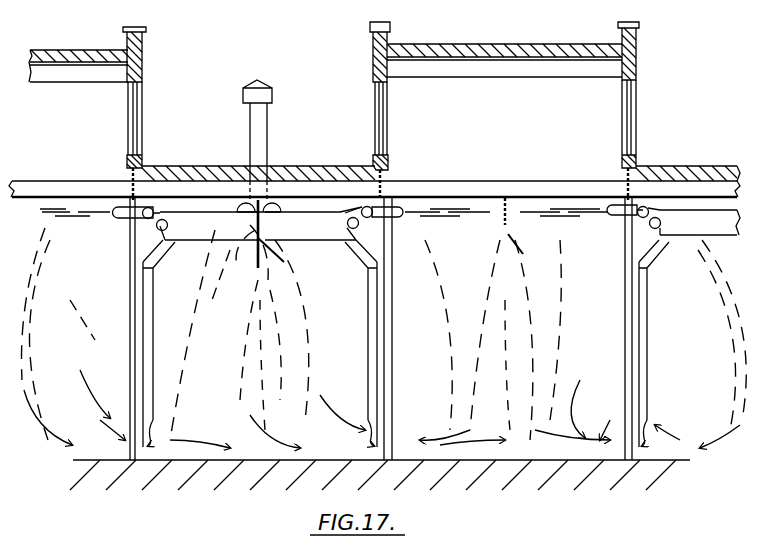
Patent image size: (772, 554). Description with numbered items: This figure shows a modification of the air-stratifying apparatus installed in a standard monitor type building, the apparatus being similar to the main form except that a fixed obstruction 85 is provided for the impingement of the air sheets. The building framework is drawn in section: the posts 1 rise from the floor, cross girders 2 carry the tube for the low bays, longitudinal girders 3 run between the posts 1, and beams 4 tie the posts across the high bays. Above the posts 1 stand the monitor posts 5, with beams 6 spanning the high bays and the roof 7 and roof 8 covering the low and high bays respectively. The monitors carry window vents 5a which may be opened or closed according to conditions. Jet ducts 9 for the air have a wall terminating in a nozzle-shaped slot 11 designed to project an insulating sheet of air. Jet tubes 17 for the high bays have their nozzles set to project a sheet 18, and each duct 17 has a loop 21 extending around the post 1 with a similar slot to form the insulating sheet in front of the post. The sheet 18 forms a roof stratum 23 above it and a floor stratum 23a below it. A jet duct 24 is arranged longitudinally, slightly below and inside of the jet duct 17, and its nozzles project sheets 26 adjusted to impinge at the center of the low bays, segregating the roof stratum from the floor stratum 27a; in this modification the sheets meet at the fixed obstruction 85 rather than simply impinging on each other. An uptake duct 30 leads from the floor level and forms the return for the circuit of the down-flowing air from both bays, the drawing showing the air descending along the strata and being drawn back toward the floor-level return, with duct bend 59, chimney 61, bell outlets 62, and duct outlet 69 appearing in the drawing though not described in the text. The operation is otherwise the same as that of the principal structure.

The posts 1 is at (129, 330).
The cross girders 2 is at (165, 190).
The longitudinal girders 3 is at (131, 190).
The beams 4 is at (50, 190).
The monitor posts 5 is at (127, 134).
The window vents 5a is at (137, 116).
The beams 6 is at (56, 78).
The roof 7 is at (313, 193).
The roof 8 is at (55, 52).
The ducts 9 is at (694, 206).
The nozzle-shaped slot 11 is at (362, 211).
The jet tubes 17 is at (163, 208).
The sheet 18 is at (88, 218).
The loop 21 is at (120, 218).
The roof stratum 23 is at (63, 137).
The floor stratum 23a is at (92, 369).
The jet duct 24 is at (157, 228).
The sheets 26 is at (218, 230).
The floor stratum 27a is at (700, 357).
The uptake duct 30 is at (150, 342).
The duct bend 59 is at (165, 258).
The chimney 61 is at (268, 150).
The bell outlets 62 is at (246, 205).
The duct outlet 69 is at (155, 427).
The fixed obstruction 85 is at (401, 240).